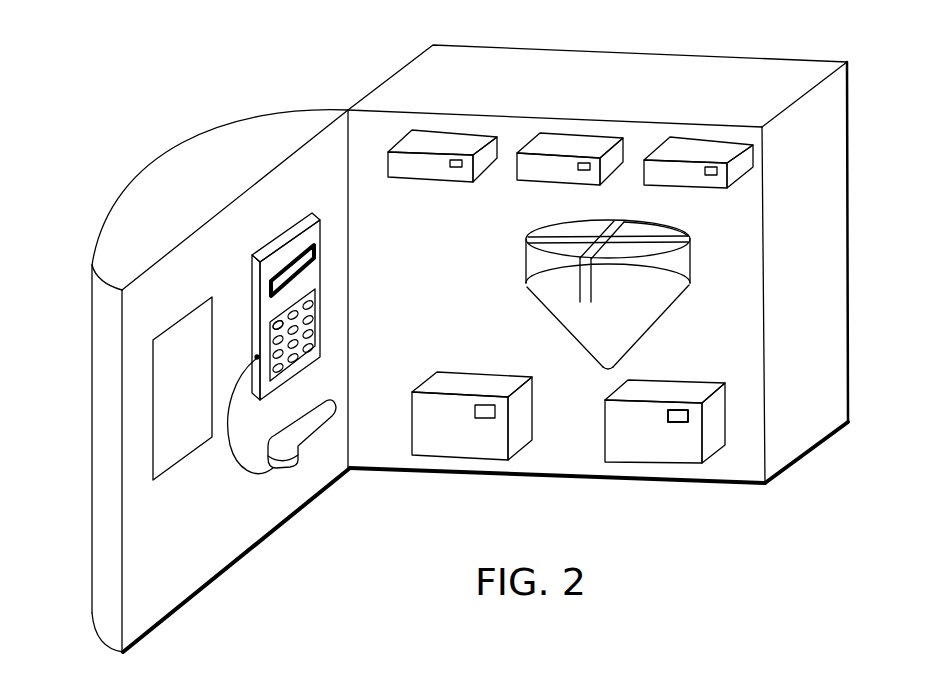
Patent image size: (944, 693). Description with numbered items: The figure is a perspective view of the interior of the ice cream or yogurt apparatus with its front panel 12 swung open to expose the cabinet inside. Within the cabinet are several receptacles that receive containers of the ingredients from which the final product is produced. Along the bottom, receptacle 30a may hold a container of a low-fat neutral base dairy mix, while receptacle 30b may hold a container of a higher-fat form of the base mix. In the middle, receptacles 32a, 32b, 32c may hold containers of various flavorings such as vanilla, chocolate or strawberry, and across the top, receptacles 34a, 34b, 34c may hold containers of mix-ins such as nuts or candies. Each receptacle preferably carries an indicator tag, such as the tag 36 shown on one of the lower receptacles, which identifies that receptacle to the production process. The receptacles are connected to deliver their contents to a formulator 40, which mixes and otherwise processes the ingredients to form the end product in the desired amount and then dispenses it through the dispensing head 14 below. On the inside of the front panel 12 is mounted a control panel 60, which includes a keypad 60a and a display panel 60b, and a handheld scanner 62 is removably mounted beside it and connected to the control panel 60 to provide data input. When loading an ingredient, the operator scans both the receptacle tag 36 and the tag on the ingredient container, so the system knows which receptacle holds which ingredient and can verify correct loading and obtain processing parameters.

The front panel 12 is at (93, 617).
The control panel 60 is at (283, 298).
The keypad 60a is at (290, 367).
The display panel 60b is at (290, 258).
The handheld scanner 62 is at (280, 470).
The receptacle 34a is at (457, 130).
The receptacle 34b is at (583, 133).
The receptacle 34c is at (712, 137).
The formulator 40 is at (604, 267).
The receptacle 32a is at (532, 260).
The receptacle 32b is at (662, 292).
The receptacle 32c is at (676, 228).
The dispensing head 14 is at (602, 373).
The indicator tag 36 is at (680, 408).
The receptacle 30a is at (453, 457).
The receptacle 30b is at (671, 433).